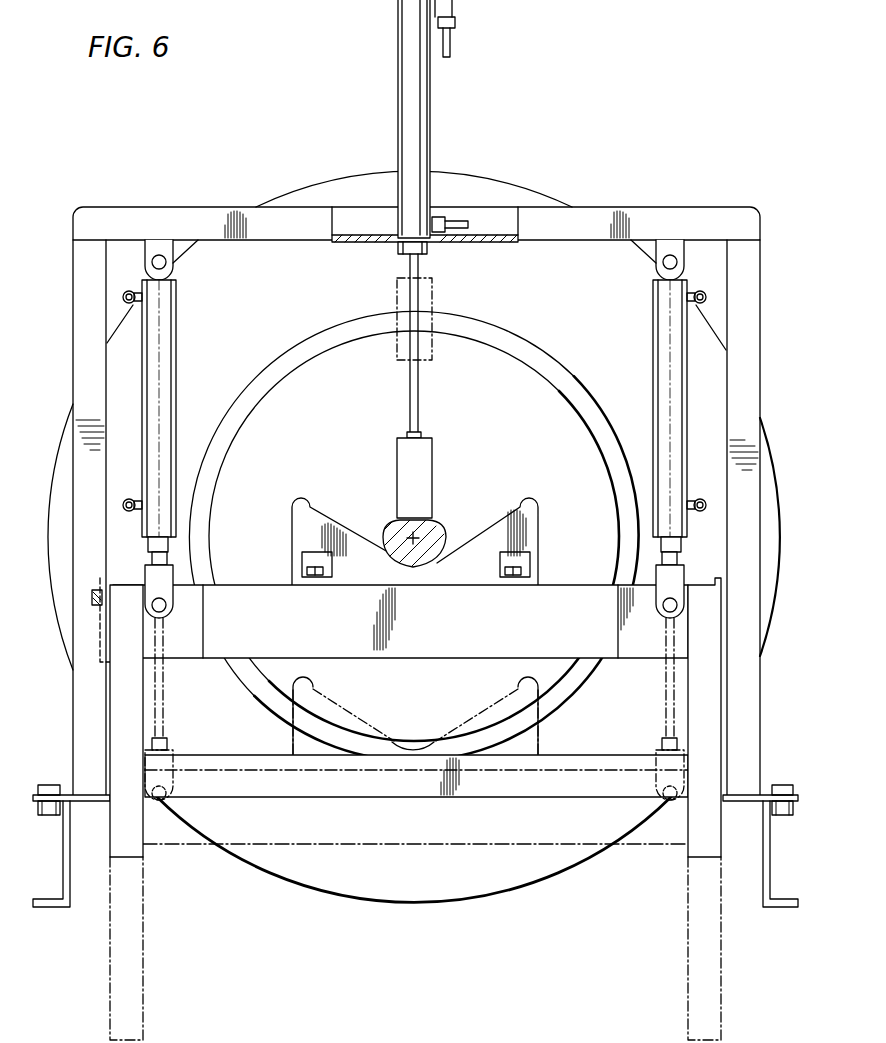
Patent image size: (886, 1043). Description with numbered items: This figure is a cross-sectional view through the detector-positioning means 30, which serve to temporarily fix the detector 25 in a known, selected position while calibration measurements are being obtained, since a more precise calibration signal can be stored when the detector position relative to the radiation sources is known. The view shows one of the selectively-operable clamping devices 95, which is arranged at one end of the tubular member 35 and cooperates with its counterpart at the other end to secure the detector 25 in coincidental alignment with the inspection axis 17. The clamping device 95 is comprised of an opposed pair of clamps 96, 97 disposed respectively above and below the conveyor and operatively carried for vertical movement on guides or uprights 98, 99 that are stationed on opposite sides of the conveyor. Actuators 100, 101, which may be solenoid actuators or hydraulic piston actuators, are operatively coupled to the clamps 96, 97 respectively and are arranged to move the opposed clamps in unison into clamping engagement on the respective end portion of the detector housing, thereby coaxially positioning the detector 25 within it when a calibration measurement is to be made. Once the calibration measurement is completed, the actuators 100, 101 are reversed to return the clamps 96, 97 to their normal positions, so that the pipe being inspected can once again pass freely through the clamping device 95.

The inspection axis 17 is at (418, 542).
The detector 25 is at (423, 533).
The detector-positioning means 30 is at (545, 184).
The tubular member 35 is at (595, 295).
The second clamping device 95 is at (50, 316).
The upper clamp 96 is at (447, 285).
The lower clamp 97 is at (531, 527).
The upright 98 is at (80, 378).
The upright 99 is at (750, 382).
The hydraulic piston actuator 100 is at (424, 107).
The hydraulic piston actuator 101 is at (164, 377).